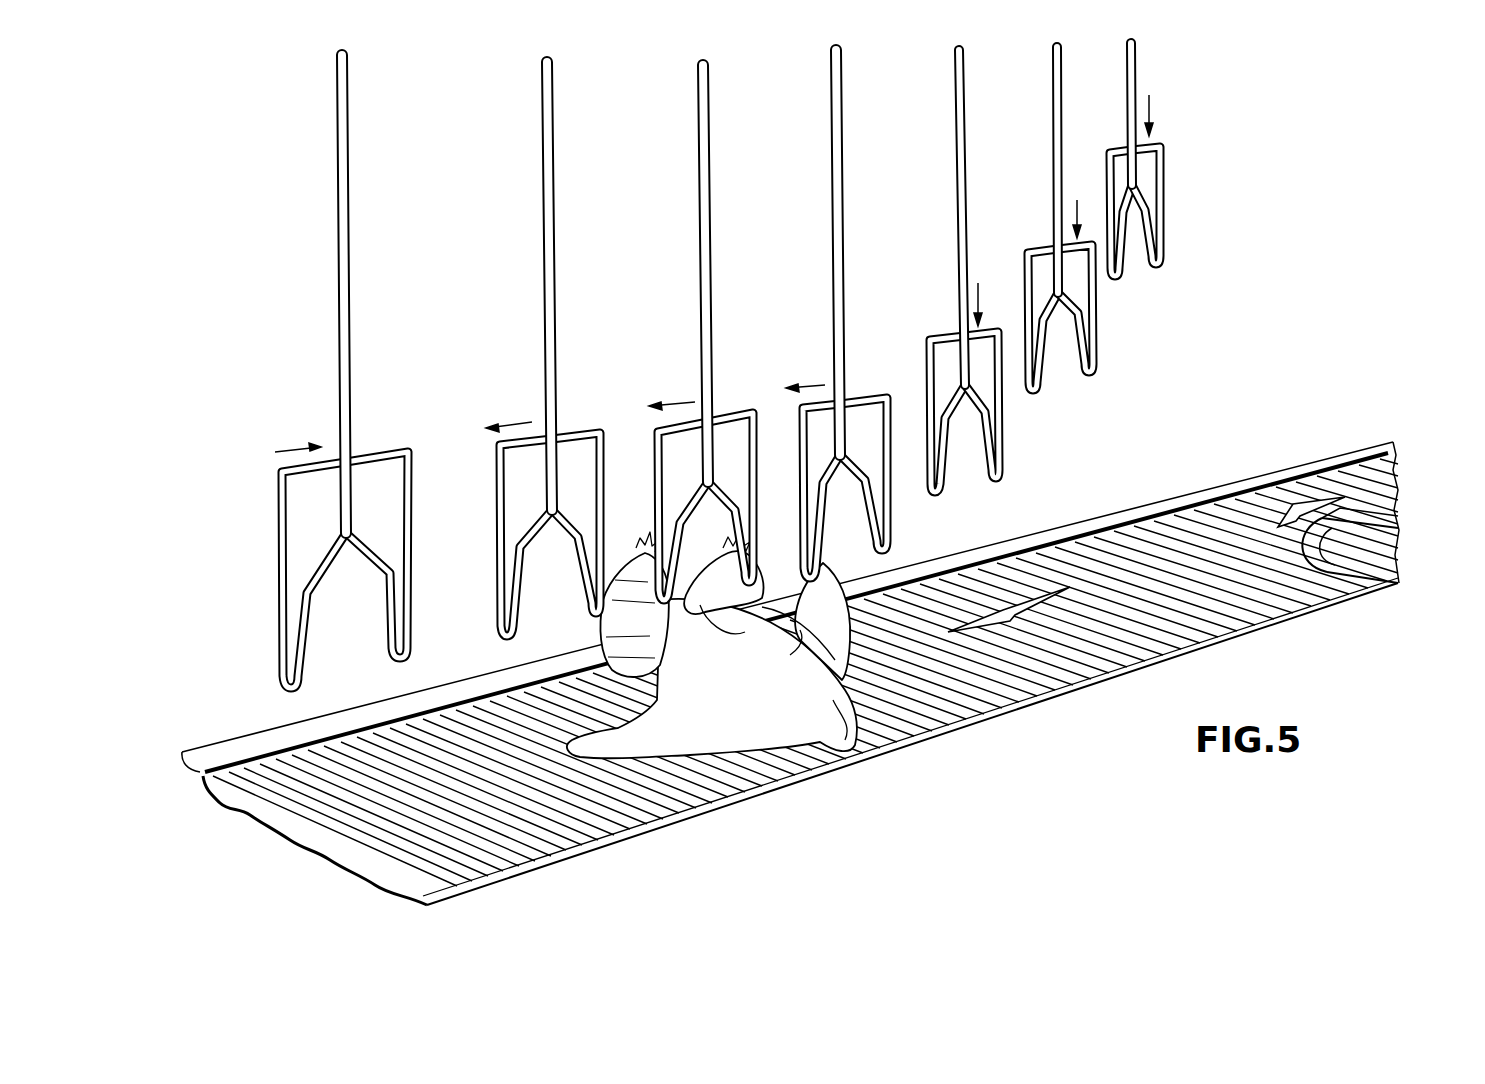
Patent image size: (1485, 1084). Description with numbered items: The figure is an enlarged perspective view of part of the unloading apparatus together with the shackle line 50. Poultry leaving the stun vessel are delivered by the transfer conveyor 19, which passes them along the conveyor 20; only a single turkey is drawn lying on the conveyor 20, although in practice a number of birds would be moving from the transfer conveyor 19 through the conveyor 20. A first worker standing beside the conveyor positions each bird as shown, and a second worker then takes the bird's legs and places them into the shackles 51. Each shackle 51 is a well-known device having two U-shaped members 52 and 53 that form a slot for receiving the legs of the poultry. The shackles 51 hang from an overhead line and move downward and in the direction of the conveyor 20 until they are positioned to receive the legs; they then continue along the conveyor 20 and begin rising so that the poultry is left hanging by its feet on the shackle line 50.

The transfer conveyor 19 is at (1363, 513).
The conveyor 20 is at (932, 698).
The shackle line 50 is at (734, 372).
The shackles 51 is at (350, 297).
The U-shaped member 52 is at (410, 656).
The U-shaped member 53 is at (281, 685).